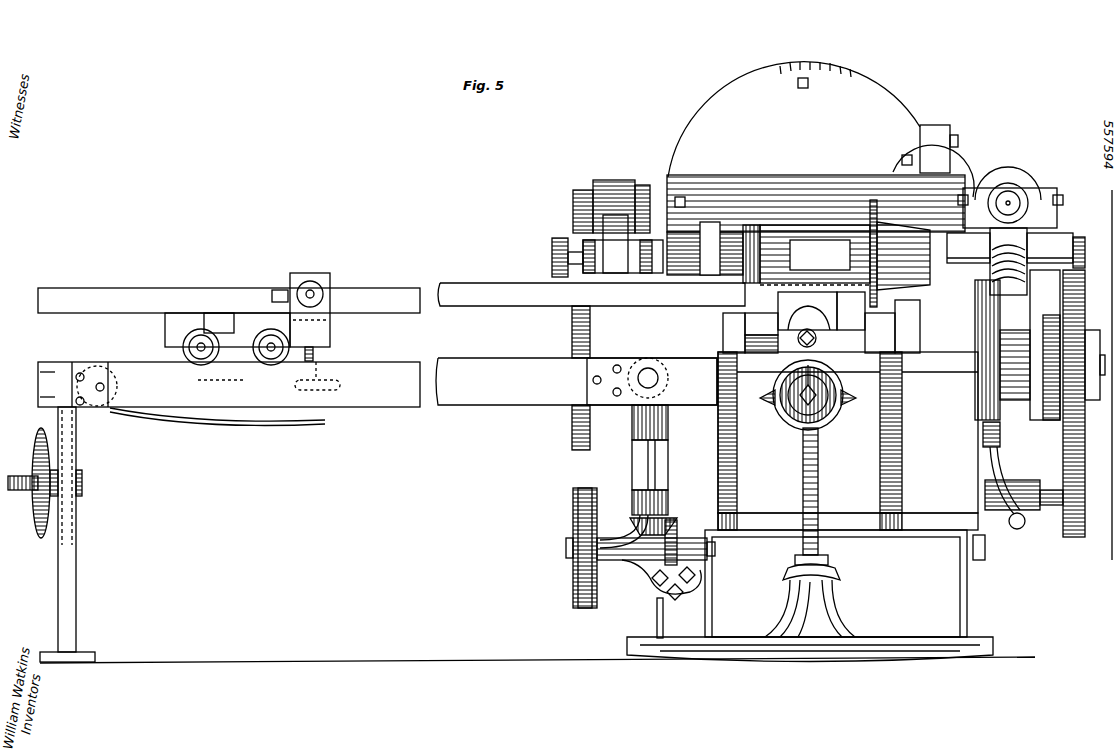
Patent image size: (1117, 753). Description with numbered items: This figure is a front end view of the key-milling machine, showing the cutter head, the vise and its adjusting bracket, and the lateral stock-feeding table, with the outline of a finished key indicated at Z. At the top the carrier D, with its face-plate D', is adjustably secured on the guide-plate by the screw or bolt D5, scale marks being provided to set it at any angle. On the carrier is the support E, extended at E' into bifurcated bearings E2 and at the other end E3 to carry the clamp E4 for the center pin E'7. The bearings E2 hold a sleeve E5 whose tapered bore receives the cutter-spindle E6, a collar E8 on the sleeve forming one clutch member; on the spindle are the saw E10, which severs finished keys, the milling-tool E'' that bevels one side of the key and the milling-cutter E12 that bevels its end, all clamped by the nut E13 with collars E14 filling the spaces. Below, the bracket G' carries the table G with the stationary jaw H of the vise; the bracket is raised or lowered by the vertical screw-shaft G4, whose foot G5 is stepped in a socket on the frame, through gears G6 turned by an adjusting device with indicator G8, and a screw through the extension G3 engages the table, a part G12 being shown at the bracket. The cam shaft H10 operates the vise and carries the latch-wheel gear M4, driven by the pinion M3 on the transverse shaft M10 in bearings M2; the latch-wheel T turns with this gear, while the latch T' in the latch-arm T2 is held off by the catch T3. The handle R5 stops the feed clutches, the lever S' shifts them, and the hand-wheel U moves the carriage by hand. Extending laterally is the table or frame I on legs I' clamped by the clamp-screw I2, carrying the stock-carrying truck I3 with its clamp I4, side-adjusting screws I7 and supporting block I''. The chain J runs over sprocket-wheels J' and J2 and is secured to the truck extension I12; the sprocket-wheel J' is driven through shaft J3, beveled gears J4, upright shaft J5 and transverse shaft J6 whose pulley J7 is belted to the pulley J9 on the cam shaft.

The key outlines Z is at (454, 298).
The table or frame I is at (377, 382).
The legs or standards I' is at (67, 534).
The clamp-screw I2 is at (43, 483).
The stock-carrying truck I3 is at (248, 347).
The clamp I4 is at (300, 273).
The side-adjusting screws I7 is at (322, 292).
The block I'' is at (208, 330).
The extension I12 is at (216, 385).
The chain J is at (217, 429).
The sprocket-wheel J' is at (652, 381).
The sprocket-wheel J2 is at (118, 386).
The shaft J3 is at (665, 390).
The beveled gears J4 is at (668, 412).
The upright shaft J5 is at (668, 470).
The transverse shaft J6 is at (635, 565).
The belt wheel or pulley J7 is at (573, 496).
The pulley J9 is at (572, 330).
The table G is at (750, 333).
The bracket G' is at (841, 494).
The extension of the bracket G3 is at (807, 311).
The vertical screw-shaft G4 is at (803, 478).
The base G5 is at (792, 590).
The gears G6 is at (839, 438).
The indicator G8 is at (838, 385).
The cam G12 is at (795, 338).
The stationary jaw H is at (851, 311).
The shaft H10 is at (1098, 410).
The support E is at (816, 203).
The extended end of support E' is at (936, 210).
The milling-tool E'' is at (815, 254).
The bearings E2 is at (1050, 248).
The extended end of support E3 is at (580, 190).
The clamp E4 is at (615, 240).
The sleeve E5 is at (1078, 237).
The cutter-spindle E6 is at (676, 265).
The collar E8 is at (904, 256).
The saw E10 is at (886, 249).
The milling-cutter E12 is at (968, 248).
The nut E13 is at (700, 232).
The collars E14 is at (735, 265).
The center pin E'7 is at (541, 255).
The bearing F is at (1045, 210).
The carrier D is at (794, 119).
The face-plate D' is at (867, 161).
The screw or bolt D5 is at (806, 90).
The bearings M2 is at (1017, 530).
The pinion M3 is at (1084, 410).
The latch-wheel M4 is at (1075, 295).
The transverse shaft M10 is at (985, 495).
The handle R5 is at (1005, 470).
The lever S' is at (980, 350).
The latch-wheel T is at (1044, 433).
The latch T' is at (1066, 344).
The latch-arm T2 is at (1016, 376).
The catch T3 is at (915, 325).
The hand-wheel U is at (1012, 408).